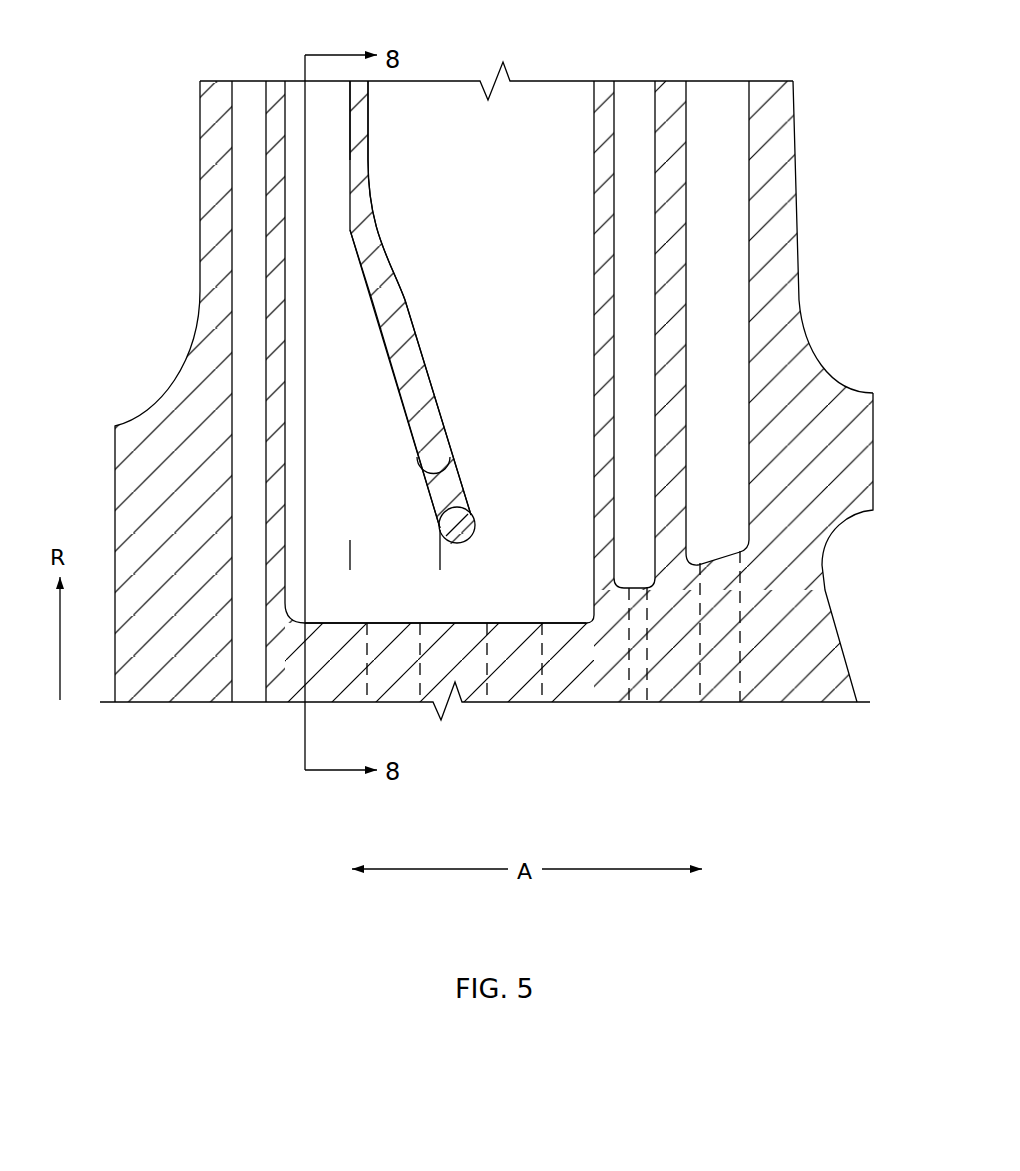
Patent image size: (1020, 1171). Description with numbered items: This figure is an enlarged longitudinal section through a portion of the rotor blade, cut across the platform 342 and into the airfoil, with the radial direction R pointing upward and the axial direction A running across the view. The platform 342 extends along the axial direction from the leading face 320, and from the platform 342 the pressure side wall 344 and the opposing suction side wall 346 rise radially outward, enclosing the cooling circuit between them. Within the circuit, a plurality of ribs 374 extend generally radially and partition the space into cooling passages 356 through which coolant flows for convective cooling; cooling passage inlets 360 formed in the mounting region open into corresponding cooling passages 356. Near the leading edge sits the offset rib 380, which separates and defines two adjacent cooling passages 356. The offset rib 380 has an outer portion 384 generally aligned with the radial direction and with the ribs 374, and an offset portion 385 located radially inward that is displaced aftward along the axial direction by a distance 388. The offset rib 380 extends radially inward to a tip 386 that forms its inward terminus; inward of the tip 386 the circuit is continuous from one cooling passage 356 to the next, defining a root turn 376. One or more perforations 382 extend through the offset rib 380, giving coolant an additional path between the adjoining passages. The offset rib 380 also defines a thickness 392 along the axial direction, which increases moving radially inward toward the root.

The leading face 320 is at (115, 451).
The platform 342 is at (862, 398).
The pressure side wall 344 is at (203, 185).
The suction side wall 346 is at (797, 225).
The cooling passages 356 is at (540, 125).
The cooling passage inlets 360 is at (545, 703).
The ribs 374 is at (272, 97).
The root turn 376 is at (465, 578).
The offset rib 380 is at (428, 232).
The perforations 382 is at (448, 487).
The outer portion 384 is at (358, 130).
The offset portion 385 is at (383, 302).
The tip 386 is at (465, 540).
The distance 388 is at (440, 560).
The thickness 392 is at (318, 158).